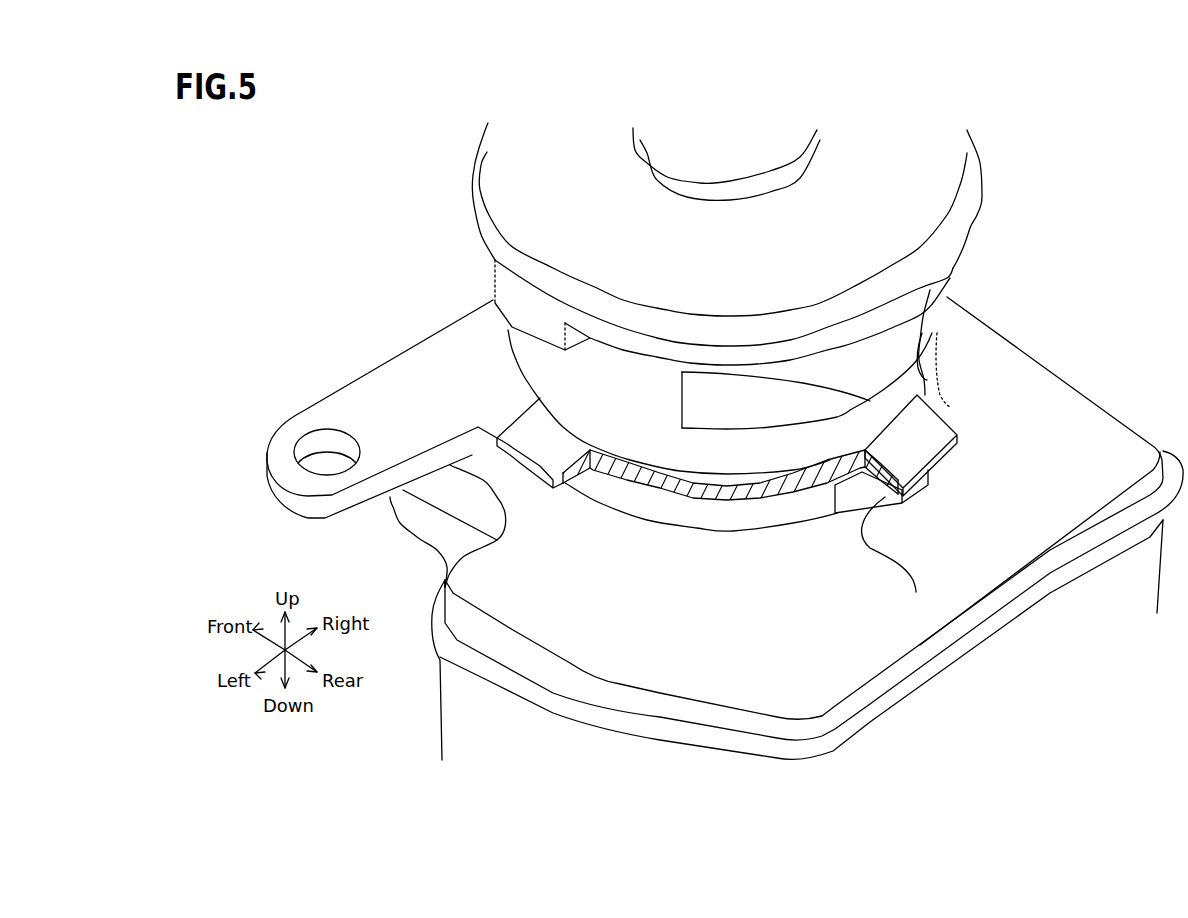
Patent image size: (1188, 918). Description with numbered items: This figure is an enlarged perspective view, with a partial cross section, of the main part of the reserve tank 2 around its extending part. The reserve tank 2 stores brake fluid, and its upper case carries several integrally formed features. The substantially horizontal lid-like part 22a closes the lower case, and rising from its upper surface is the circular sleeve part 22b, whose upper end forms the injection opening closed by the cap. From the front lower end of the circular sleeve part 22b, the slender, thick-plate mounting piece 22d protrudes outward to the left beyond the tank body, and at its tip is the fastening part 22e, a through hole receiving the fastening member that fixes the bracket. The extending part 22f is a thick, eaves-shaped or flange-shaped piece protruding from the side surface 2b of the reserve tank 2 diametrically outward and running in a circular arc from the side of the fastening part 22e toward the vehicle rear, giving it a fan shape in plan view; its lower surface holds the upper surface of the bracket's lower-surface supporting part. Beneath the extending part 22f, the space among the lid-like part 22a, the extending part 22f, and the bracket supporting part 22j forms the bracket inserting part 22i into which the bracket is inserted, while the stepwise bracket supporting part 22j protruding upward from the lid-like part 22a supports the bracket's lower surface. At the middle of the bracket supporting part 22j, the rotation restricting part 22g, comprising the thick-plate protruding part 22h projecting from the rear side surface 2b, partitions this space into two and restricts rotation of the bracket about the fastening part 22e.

The reserve tank 2 is at (791, 342).
The side surface 2b is at (655, 425).
The lid-like part 22a is at (707, 640).
The circular sleeve part 22b is at (612, 407).
The mounting piece 22d is at (412, 395).
The fastening part 22e is at (310, 447).
The extending part 22f is at (547, 442).
The rotation restricting part 22g is at (918, 510).
The protruding part 22h is at (913, 485).
The bracket inserting part 22i is at (723, 512).
The bracket supporting part 22j is at (836, 505).